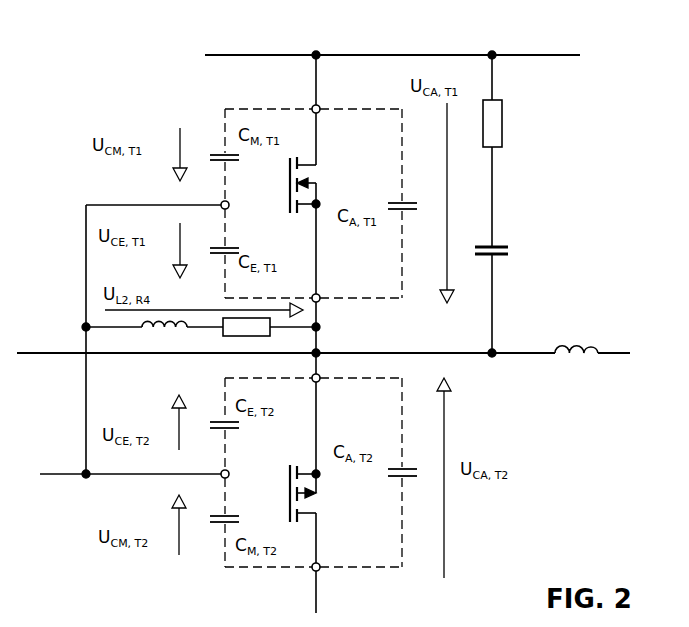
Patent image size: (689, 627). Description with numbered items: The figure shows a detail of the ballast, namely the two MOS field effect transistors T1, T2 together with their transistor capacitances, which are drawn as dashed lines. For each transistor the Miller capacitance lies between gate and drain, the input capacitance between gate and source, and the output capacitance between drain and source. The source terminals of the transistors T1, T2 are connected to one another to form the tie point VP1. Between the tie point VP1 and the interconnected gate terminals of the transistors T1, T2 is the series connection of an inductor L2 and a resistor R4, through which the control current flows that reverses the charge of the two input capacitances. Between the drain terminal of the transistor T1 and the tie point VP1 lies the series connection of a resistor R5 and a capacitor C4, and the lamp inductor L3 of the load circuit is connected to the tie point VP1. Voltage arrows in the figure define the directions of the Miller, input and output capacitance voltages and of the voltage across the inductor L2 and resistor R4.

The MOS field effect transistor T1 is at (320, 185).
The MOS field effect transistor T2 is at (317, 493).
The resistor R5 is at (509, 149).
The capacitor C4 is at (508, 300).
The lamp inductor L3 is at (576, 333).
The inductor L2 is at (136, 335).
The resistor R4 is at (251, 333).
The tie point VP1 is at (337, 327).